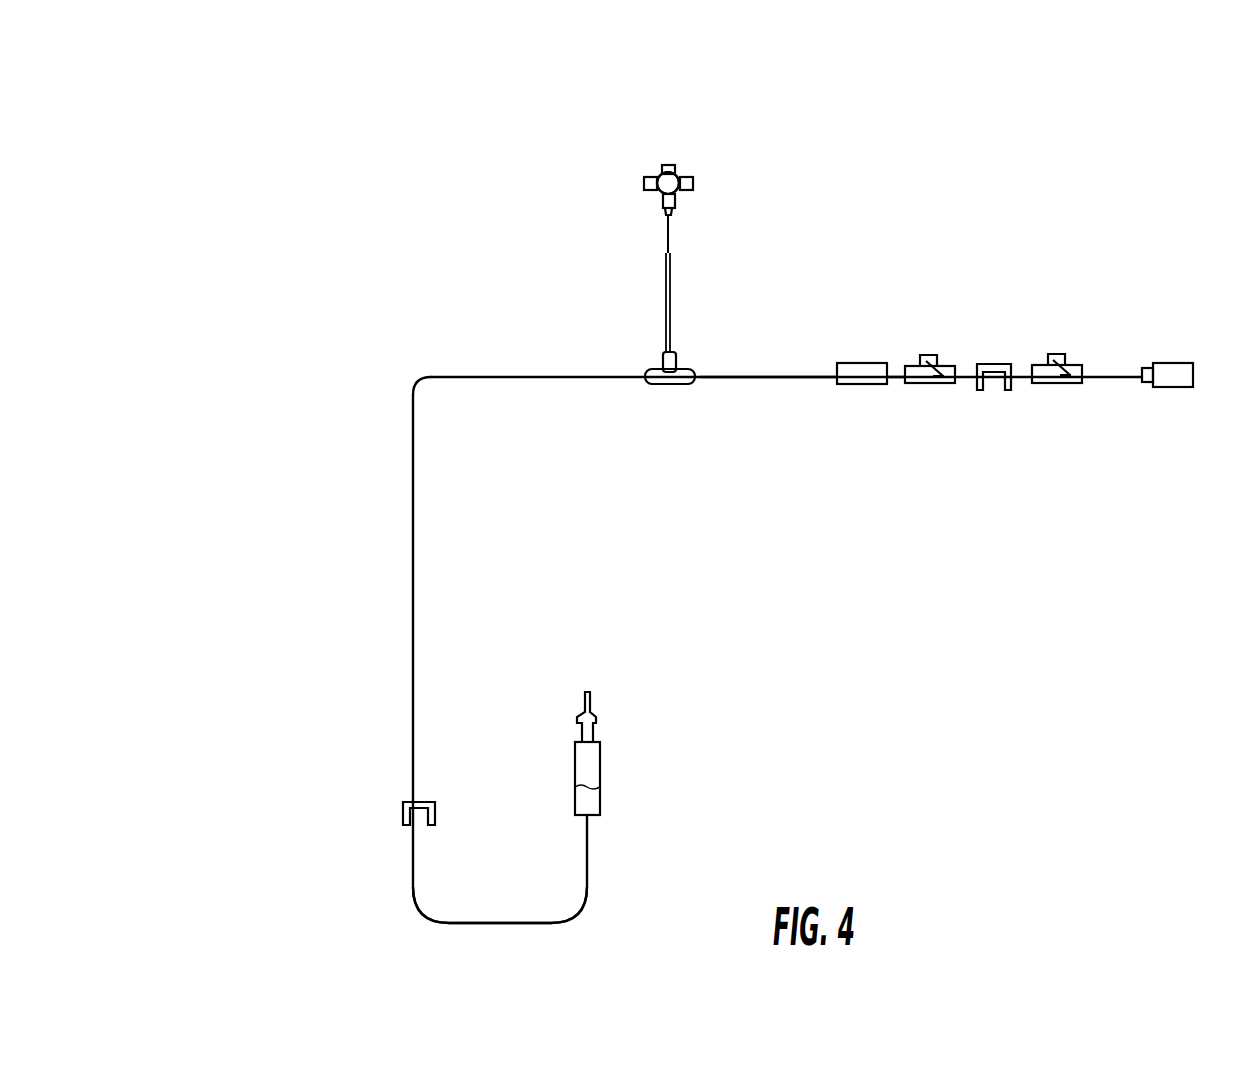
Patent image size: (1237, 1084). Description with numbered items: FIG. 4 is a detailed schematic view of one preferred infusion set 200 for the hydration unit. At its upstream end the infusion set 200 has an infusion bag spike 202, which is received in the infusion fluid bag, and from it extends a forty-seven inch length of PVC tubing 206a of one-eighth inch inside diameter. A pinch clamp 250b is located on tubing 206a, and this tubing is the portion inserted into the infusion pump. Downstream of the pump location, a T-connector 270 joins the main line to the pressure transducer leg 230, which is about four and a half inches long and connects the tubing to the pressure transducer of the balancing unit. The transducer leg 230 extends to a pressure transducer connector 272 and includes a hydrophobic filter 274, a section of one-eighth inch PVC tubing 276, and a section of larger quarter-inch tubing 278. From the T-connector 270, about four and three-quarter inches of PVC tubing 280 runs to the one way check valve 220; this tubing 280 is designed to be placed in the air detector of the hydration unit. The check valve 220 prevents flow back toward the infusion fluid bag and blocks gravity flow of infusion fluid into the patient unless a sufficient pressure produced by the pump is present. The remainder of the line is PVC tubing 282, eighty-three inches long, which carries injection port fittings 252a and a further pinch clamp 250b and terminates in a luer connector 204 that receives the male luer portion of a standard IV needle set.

The infusion set 200 is at (324, 536).
The infusion bag spike connector 202 is at (592, 767).
The luer connector 204 is at (1175, 376).
The PVC tubing 206a is at (473, 922).
The one way check valve 220 is at (872, 383).
The pressure transducer leg 230 is at (626, 271).
The pinch clamp 250b is at (993, 365).
The injection port fitting 252a is at (930, 386).
The T-connector 270 is at (673, 385).
The pressure transducer connector 272 is at (679, 168).
The hydrophobic filter 274 is at (656, 178).
The PVC tubing 276 is at (673, 246).
The tubing 278 is at (672, 307).
The PVC tubing 280 is at (740, 379).
The PVC tubing 282 is at (897, 374).